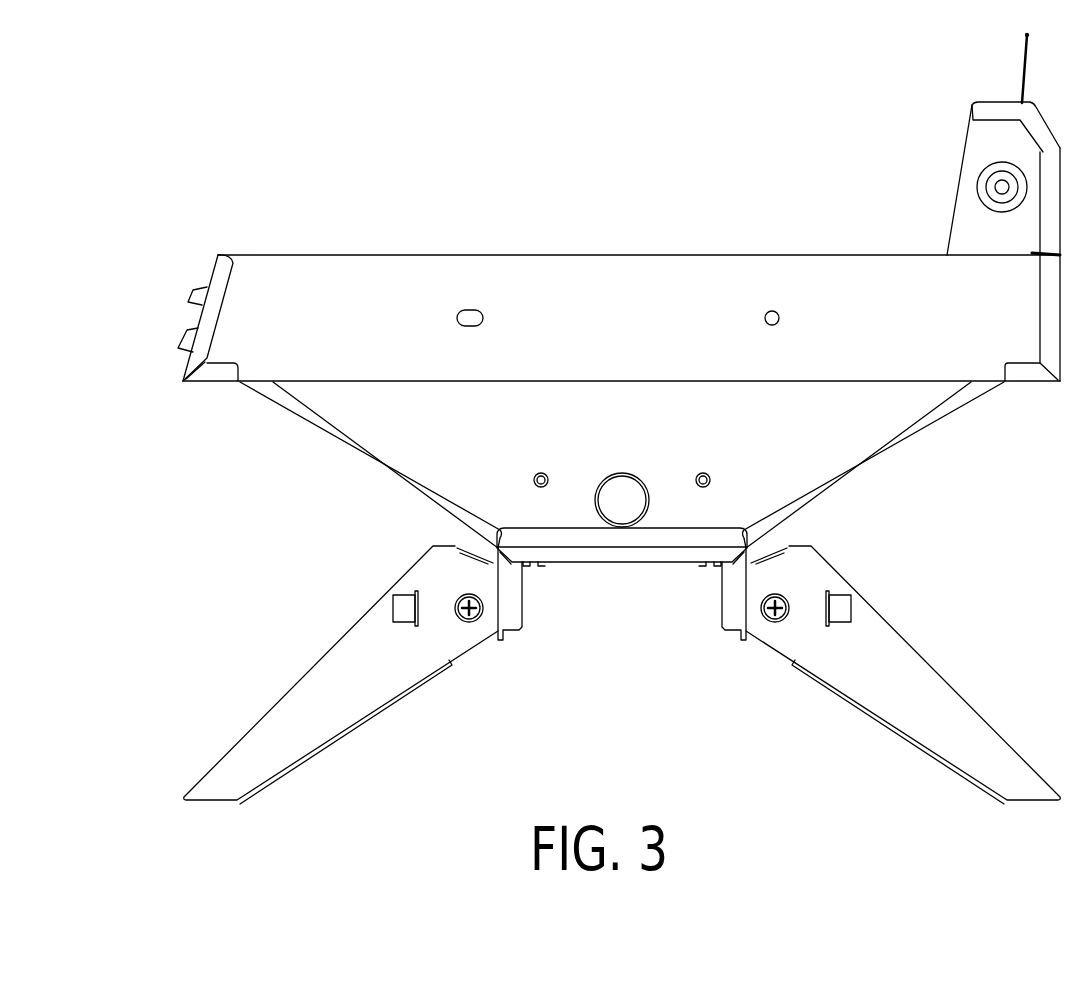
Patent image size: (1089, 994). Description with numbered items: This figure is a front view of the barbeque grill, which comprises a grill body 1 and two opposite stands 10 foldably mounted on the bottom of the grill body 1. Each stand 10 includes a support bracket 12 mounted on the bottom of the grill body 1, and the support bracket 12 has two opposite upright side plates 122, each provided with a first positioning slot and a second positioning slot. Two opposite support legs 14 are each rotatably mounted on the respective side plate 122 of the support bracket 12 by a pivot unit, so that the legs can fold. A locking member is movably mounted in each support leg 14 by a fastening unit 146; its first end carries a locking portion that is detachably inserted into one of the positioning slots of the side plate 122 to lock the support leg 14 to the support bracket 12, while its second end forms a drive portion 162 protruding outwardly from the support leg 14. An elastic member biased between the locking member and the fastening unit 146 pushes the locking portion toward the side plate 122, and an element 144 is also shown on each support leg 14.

The grill body 1 is at (627, 278).
The stand 10 is at (622, 650).
The support bracket 12 is at (622, 626).
The side plate 122 is at (510, 607).
The support leg 14 is at (282, 742).
The positioning pin 144 is at (397, 608).
The fastening unit 146 is at (466, 623).
The drive portion 162 is at (417, 608).